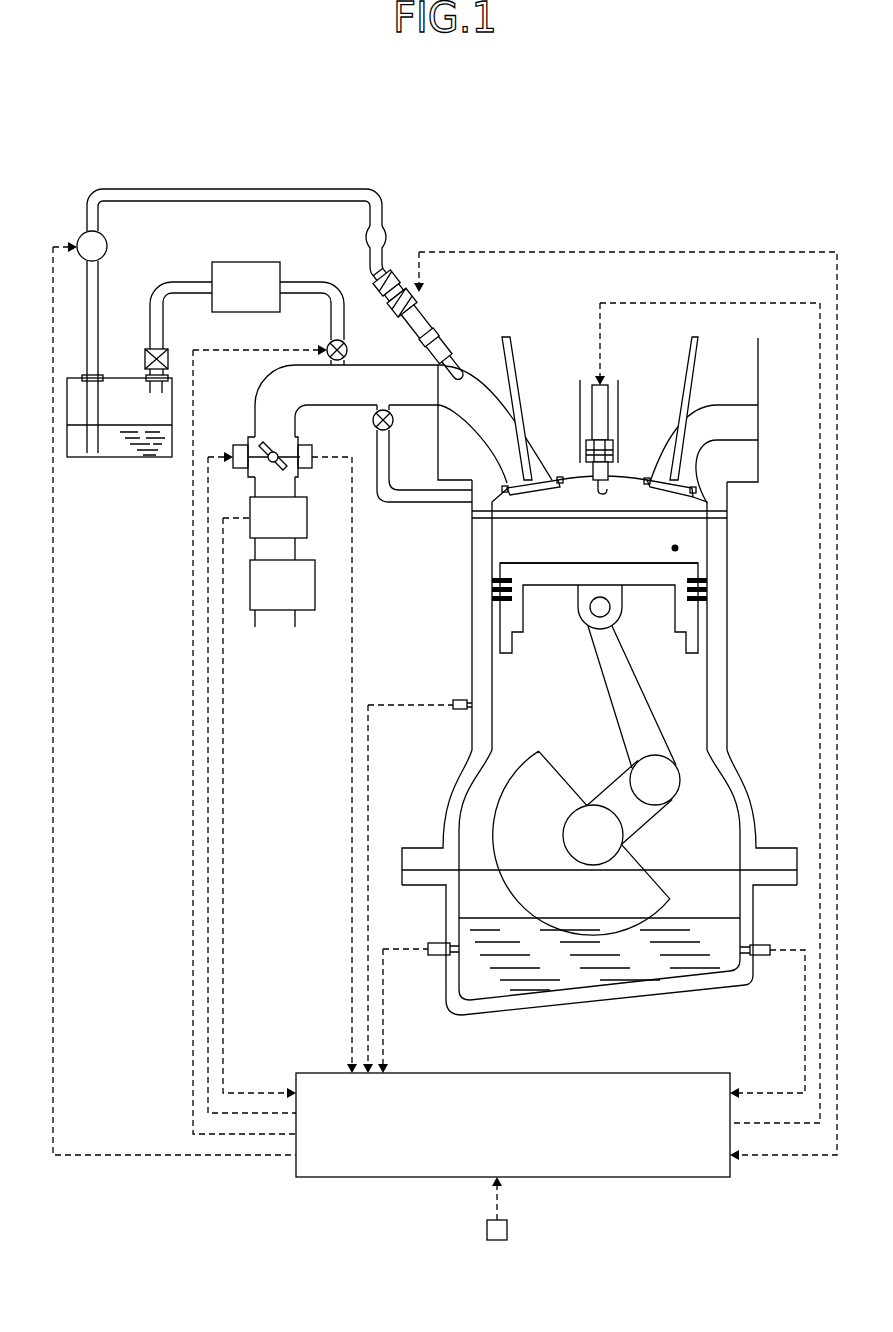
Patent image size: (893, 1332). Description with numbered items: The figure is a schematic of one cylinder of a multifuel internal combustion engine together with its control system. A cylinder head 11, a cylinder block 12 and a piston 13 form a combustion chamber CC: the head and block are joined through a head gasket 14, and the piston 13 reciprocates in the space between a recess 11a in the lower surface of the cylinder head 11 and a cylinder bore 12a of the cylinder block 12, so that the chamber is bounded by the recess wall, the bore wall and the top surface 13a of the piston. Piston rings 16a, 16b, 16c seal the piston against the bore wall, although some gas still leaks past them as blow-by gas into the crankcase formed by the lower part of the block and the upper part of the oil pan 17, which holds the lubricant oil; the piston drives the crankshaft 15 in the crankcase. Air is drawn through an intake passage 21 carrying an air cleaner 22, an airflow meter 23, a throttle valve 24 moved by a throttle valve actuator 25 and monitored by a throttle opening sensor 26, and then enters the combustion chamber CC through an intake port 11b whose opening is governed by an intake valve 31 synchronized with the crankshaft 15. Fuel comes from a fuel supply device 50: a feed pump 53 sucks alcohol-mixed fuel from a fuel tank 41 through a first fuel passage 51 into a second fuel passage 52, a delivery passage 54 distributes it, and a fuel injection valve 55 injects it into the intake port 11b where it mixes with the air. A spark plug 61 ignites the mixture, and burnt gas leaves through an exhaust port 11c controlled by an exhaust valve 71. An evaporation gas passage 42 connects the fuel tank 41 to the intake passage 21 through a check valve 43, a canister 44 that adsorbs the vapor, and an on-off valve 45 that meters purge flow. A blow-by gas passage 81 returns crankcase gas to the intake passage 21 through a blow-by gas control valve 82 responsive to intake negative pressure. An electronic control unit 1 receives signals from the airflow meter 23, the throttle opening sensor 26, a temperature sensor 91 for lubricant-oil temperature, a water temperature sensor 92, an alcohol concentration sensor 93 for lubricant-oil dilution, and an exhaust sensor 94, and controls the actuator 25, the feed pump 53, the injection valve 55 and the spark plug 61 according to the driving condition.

The electronic control unit 1 is at (565, 1072).
The cylinder head 11 is at (759, 468).
The recess 11a is at (708, 506).
The intake port 11b is at (493, 440).
The exhaust port 11c is at (693, 455).
The cylinder block 12 is at (472, 595).
The cylinder bore 12a is at (706, 672).
The piston 13 is at (548, 638).
The top surface 13a is at (505, 562).
The head gasket 14 is at (472, 514).
The crankshaft 15 is at (626, 830).
The piston ring 16a is at (710, 580).
The piston ring 16b is at (710, 589).
The piston ring 16c is at (710, 598).
The oil pan 17 is at (668, 998).
The intake passage 21 is at (373, 364).
The air cleaner 22 is at (316, 590).
The airflow meter 23 is at (308, 520).
The throttle valve 24 is at (270, 450).
The throttle valve actuator 25 is at (232, 446).
The throttle opening sensor 26 is at (310, 446).
The intake valve 31 is at (520, 384).
The fuel tank 41 is at (118, 377).
The evaporation gas passage 42 is at (297, 283).
The check valve 43 is at (170, 357).
The canister 44 is at (250, 261).
The on-off valve 45 is at (347, 347).
The fuel supply device 50 is at (252, 124).
The first fuel passage 51 is at (87, 338).
The second fuel passage 52 is at (231, 188).
The feed pump 53 is at (108, 246).
The delivery passage 54 is at (385, 236).
The fuel injection valve 55 is at (424, 312).
The spark plug 61 is at (596, 384).
The exhaust valve 71 is at (686, 384).
The blow-by gas passage 81 is at (406, 506).
The blow-by gas control valve 82 is at (392, 428).
The temperature sensor 91 is at (760, 944).
The water temperature sensor 92 is at (460, 699).
The alcohol concentration sensor 93 is at (438, 942).
The exhaust sensor 94 is at (507, 1228).
The combustion chamber CC is at (678, 549).